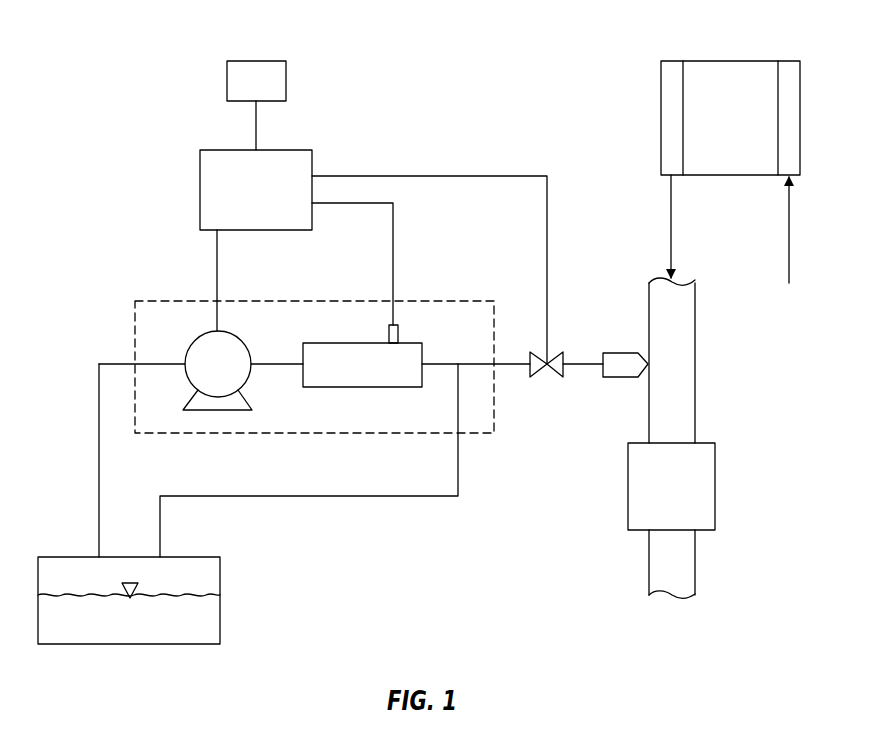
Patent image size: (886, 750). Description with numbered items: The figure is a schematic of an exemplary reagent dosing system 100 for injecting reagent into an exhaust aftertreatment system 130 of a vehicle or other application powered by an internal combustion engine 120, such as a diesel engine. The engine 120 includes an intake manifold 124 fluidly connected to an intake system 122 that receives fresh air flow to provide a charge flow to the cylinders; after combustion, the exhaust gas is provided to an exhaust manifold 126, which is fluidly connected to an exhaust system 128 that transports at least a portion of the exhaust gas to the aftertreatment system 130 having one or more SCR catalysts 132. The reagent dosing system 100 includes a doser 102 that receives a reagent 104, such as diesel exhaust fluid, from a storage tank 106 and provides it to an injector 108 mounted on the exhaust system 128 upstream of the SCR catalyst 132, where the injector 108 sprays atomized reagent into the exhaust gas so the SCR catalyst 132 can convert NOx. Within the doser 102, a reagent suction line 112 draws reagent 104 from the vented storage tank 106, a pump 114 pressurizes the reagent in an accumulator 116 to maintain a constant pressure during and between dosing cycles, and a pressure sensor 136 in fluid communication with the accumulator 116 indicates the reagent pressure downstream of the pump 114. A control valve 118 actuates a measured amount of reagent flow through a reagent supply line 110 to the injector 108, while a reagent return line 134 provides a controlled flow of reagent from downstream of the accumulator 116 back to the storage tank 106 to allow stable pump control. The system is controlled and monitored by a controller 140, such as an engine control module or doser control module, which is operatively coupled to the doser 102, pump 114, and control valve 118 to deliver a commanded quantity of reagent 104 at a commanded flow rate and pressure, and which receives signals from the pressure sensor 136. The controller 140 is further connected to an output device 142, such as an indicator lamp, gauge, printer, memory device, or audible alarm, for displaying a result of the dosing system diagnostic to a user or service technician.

The reagent dosing system 100 is at (119, 48).
The doser 102 is at (132, 326).
The reagent 104 is at (147, 636).
The storage tank 106 is at (221, 600).
The injector 108 is at (620, 352).
The reagent supply line 110 is at (476, 362).
The reagent suction line 112 is at (98, 460).
The pump 114 is at (236, 376).
The accumulator 116 is at (381, 376).
The control valve 118 is at (546, 377).
The internal combustion engine 120 is at (748, 130).
The intake system 122 is at (786, 230).
The intake manifold 124 is at (790, 68).
The exhaust manifold 126 is at (660, 120).
The exhaust system 128 is at (696, 365).
The exhaust aftertreatment system 130 is at (719, 488).
The SCR catalyst 132 is at (689, 499).
The reagent return line 134 is at (309, 498).
The pressure sensor 136 is at (388, 332).
The controller 140 is at (274, 202).
The output device 142 is at (274, 93).